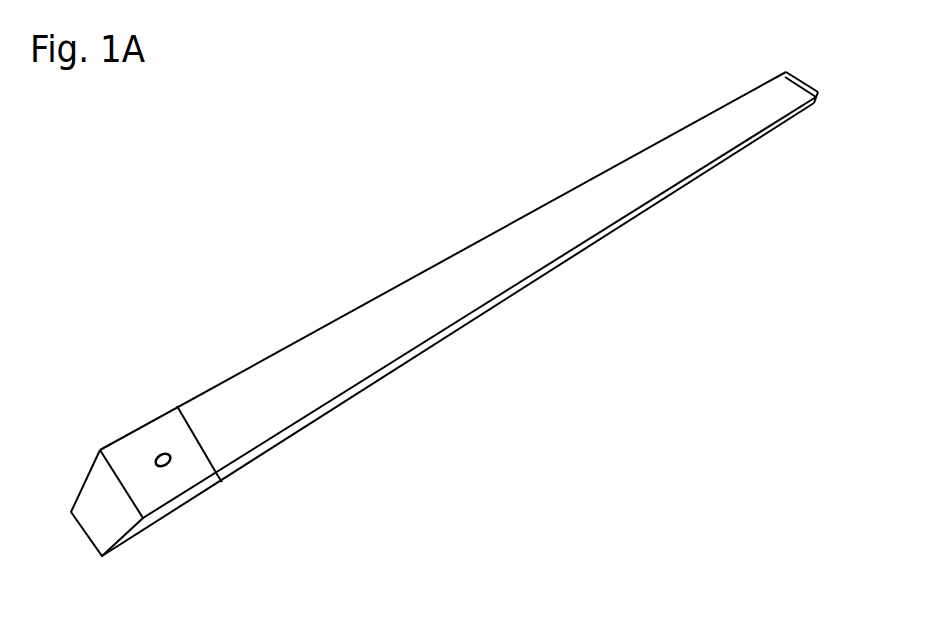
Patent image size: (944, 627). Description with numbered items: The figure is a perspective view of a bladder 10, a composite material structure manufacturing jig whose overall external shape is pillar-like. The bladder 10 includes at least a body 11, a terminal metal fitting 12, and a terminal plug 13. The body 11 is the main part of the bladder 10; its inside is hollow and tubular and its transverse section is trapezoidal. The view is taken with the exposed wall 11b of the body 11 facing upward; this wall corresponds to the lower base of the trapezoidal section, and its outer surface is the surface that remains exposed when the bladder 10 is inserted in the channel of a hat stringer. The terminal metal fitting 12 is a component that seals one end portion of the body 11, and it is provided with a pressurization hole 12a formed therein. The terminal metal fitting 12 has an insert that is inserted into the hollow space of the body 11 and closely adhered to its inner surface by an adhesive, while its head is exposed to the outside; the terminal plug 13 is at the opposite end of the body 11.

The bladder 10 is at (462, 314).
The body 11 is at (476, 314).
The exposed wall 11b is at (417, 307).
The terminal metal fitting 12 is at (185, 442).
The pressurization hole 12a is at (162, 452).
The terminal plug 13 is at (818, 83).